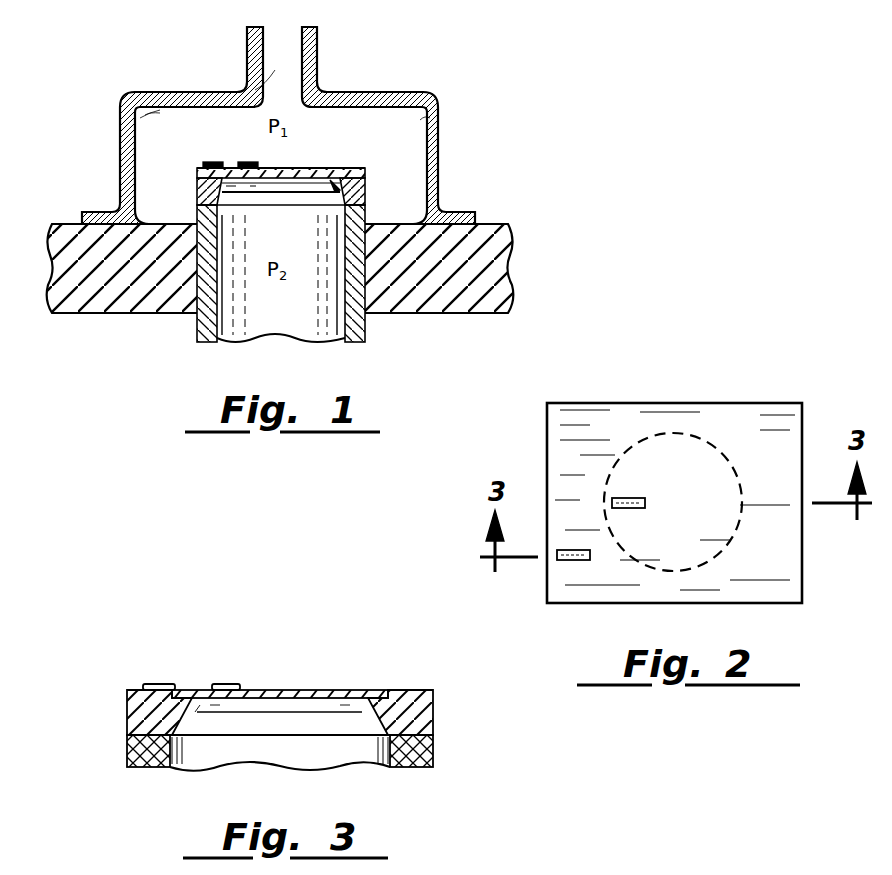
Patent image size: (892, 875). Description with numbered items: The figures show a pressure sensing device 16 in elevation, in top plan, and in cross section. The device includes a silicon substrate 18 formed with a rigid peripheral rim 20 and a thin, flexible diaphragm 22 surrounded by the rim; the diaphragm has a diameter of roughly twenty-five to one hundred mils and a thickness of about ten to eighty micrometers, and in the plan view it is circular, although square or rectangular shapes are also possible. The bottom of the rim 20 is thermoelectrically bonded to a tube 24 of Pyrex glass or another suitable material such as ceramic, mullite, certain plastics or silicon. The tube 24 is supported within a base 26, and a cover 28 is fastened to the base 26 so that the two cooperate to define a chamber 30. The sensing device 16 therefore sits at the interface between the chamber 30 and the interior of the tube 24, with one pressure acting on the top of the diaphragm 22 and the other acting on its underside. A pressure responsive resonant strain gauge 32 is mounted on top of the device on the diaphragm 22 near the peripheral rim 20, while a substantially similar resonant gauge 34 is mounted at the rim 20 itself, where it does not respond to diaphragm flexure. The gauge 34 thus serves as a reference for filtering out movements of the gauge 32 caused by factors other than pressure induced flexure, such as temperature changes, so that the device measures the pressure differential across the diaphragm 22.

In FIG. 1, the pressure sensing device 16 is at (410, 66).
In FIG. 1, the silicon substrate 18 is at (323, 188).
In FIG. 2, the silicon substrate 18 is at (610, 423).
In FIG. 3, the silicon substrate 18 is at (278, 708).
In FIG. 1, the rigid peripheral rim 20 is at (352, 176).
In FIG. 2, the rigid peripheral rim 20 is at (780, 558).
In FIG. 3, the rigid peripheral rim 20 is at (400, 692).
In FIG. 1, the diaphragm 22 is at (293, 168).
In FIG. 2, the diaphragm 22 is at (703, 437).
In FIG. 3, the diaphragm 22 is at (285, 690).
In FIG. 1, the tube 24 is at (365, 328).
In FIG. 3, the tube 24 is at (130, 753).
In FIG. 1, the base 26 is at (488, 268).
In FIG. 1, the cover 28 is at (173, 92).
In FIG. 1, the chamber 30 is at (163, 133).
In FIG. 1, the pressure responsive resonant strain gauge 32 is at (250, 162).
In FIG. 2, the pressure responsive resonant strain gauge 32 is at (620, 498).
In FIG. 3, the pressure responsive resonant strain gauge 32 is at (233, 683).
In FIG. 1, the resonant gauge 34 is at (208, 160).
In FIG. 2, the resonant gauge 34 is at (575, 560).
In FIG. 3, the resonant gauge 34 is at (160, 683).